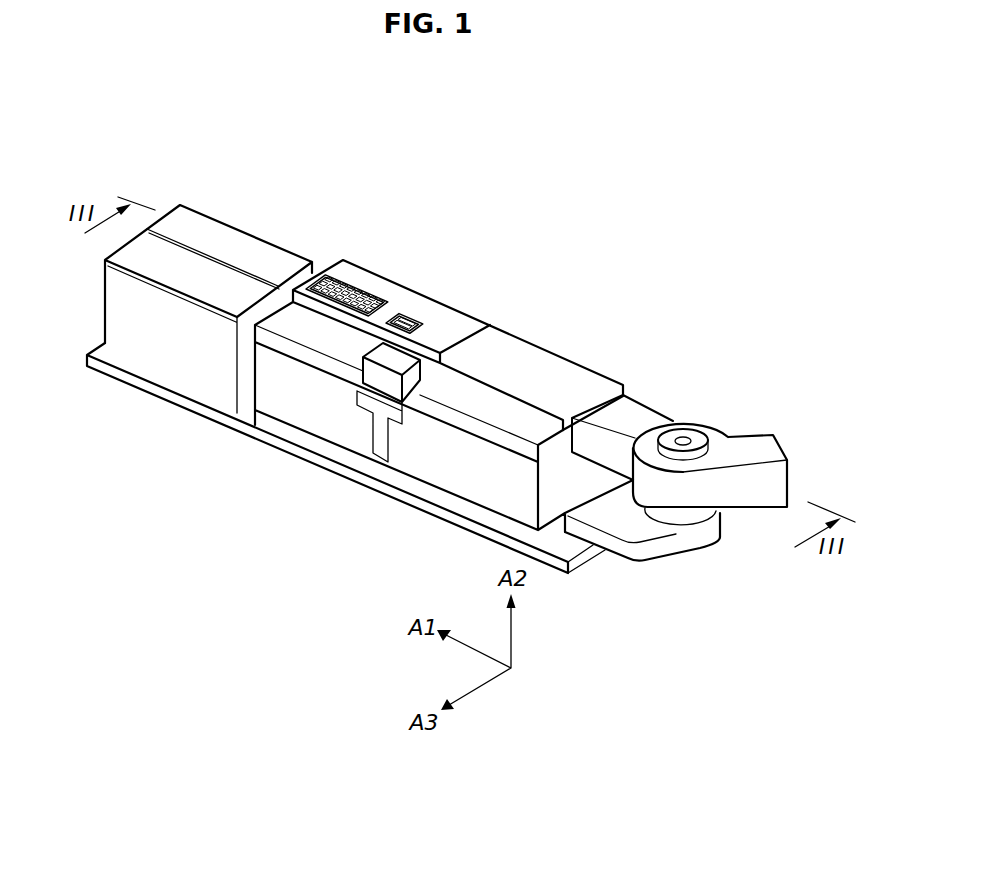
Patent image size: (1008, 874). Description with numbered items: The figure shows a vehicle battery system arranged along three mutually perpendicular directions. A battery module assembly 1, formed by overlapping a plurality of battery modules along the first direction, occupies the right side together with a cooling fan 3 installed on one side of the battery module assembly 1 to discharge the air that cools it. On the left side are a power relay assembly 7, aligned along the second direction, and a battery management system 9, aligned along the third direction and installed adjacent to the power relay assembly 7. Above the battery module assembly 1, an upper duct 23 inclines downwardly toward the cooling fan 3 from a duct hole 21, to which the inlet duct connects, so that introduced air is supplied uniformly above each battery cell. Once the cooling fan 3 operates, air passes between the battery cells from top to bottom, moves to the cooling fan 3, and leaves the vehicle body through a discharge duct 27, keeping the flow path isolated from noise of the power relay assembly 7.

The battery module assembly 1 is at (447, 477).
The cooling fan 3 is at (697, 437).
The power relay assembly 7 is at (228, 242).
The battery management system 9 is at (172, 358).
The duct hole 21 is at (416, 314).
The upper duct 23 is at (463, 327).
The discharge duct 27 is at (753, 495).